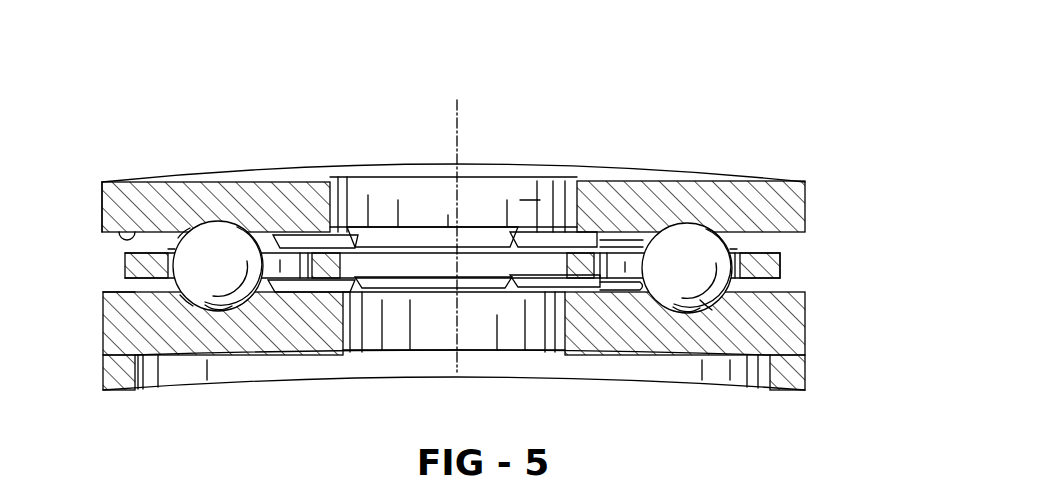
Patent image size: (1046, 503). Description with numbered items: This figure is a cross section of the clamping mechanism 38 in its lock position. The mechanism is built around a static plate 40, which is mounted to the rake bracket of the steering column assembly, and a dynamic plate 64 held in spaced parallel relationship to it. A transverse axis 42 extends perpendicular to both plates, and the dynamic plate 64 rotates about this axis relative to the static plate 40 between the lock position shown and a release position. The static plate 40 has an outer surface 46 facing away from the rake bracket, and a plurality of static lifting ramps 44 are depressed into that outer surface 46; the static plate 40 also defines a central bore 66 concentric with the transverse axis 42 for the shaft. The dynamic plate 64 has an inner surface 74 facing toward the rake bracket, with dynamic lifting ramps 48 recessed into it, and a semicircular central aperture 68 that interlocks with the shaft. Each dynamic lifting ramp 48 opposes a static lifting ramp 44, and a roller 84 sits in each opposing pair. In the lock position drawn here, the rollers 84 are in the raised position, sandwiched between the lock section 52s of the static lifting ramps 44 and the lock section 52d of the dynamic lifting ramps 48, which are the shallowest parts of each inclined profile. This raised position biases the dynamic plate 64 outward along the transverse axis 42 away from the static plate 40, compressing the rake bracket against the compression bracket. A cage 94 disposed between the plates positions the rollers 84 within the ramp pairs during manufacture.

The clamping mechanism 38 is at (804, 96).
The static plate 40 is at (807, 322).
The transverse axis 42 is at (460, 113).
The static lifting ramps 44 is at (225, 311).
The outer surface 46 is at (137, 288).
The dynamic lifting ramps 48 is at (219, 224).
The lock section 52d is at (186, 236).
The lock section 52s is at (188, 297).
The dynamic plate 64 is at (806, 197).
The central bore 66 is at (345, 328).
The central aperture 68 is at (540, 207).
The inner surface 74 is at (142, 238).
The rollers 84 is at (197, 249).
The cage 94 is at (783, 263).